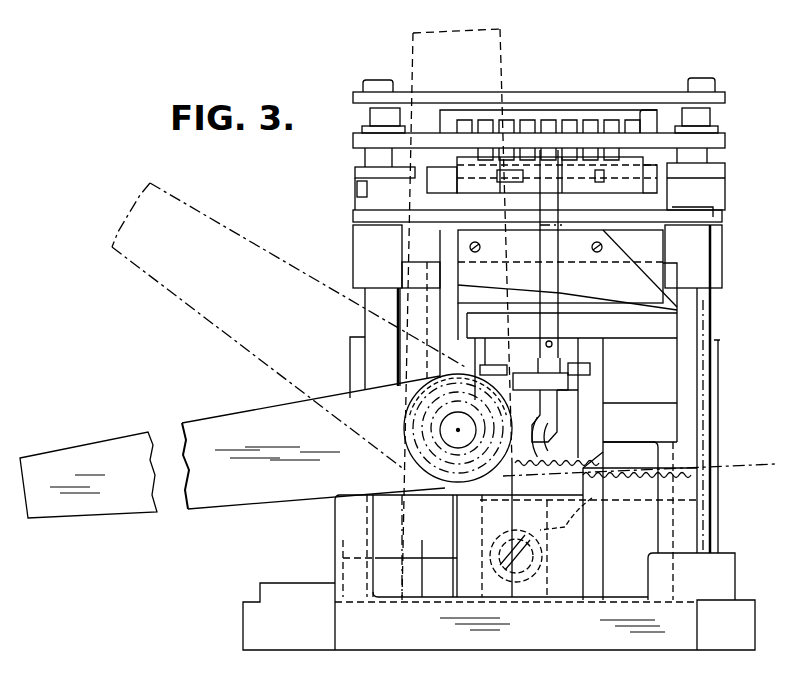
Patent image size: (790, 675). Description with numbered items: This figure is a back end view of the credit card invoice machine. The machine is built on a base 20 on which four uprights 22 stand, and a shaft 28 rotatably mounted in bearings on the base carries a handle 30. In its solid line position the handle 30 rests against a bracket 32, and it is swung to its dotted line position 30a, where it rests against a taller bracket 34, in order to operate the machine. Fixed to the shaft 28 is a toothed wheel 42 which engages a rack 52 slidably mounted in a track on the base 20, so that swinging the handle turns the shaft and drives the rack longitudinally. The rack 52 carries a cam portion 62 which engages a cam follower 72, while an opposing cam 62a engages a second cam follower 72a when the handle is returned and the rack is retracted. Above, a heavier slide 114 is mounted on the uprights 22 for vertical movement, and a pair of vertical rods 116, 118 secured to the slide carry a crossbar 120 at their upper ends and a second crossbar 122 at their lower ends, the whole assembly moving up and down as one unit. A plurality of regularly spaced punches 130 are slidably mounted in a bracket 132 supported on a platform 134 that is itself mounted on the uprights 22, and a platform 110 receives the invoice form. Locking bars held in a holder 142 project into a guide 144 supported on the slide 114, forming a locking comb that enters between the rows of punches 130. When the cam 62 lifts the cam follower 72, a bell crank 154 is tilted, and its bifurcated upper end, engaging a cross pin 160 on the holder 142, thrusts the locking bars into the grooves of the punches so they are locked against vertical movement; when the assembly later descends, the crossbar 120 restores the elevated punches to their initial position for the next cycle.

The base 20 is at (247, 631).
The uprights 22 is at (370, 321).
The shaft 28 is at (452, 421).
The handle 30 is at (125, 505).
The dotted line position of handle 30a is at (759, 469).
The bracket 32 is at (334, 535).
The taller bracket 34 is at (693, 518).
The toothed wheel 42 is at (408, 381).
The rack 52 is at (634, 478).
The cam portion 62 is at (590, 455).
The second cam 62a is at (578, 523).
The cam follower 72 is at (522, 447).
The second cam follower 72a is at (535, 586).
The platform 110 is at (720, 254).
The slide 114 is at (727, 187).
The rod 116 is at (372, 118).
The rod 118 is at (712, 116).
The crossbar 120 is at (722, 96).
The second crossbar 122 is at (719, 353).
The punches 130 is at (571, 122).
The bracket 132 is at (650, 112).
The platform 134 is at (724, 138).
The holder 142 is at (645, 185).
The guide 144 is at (428, 176).
The bell crank 154 is at (560, 276).
The cross pin 160 is at (600, 182).